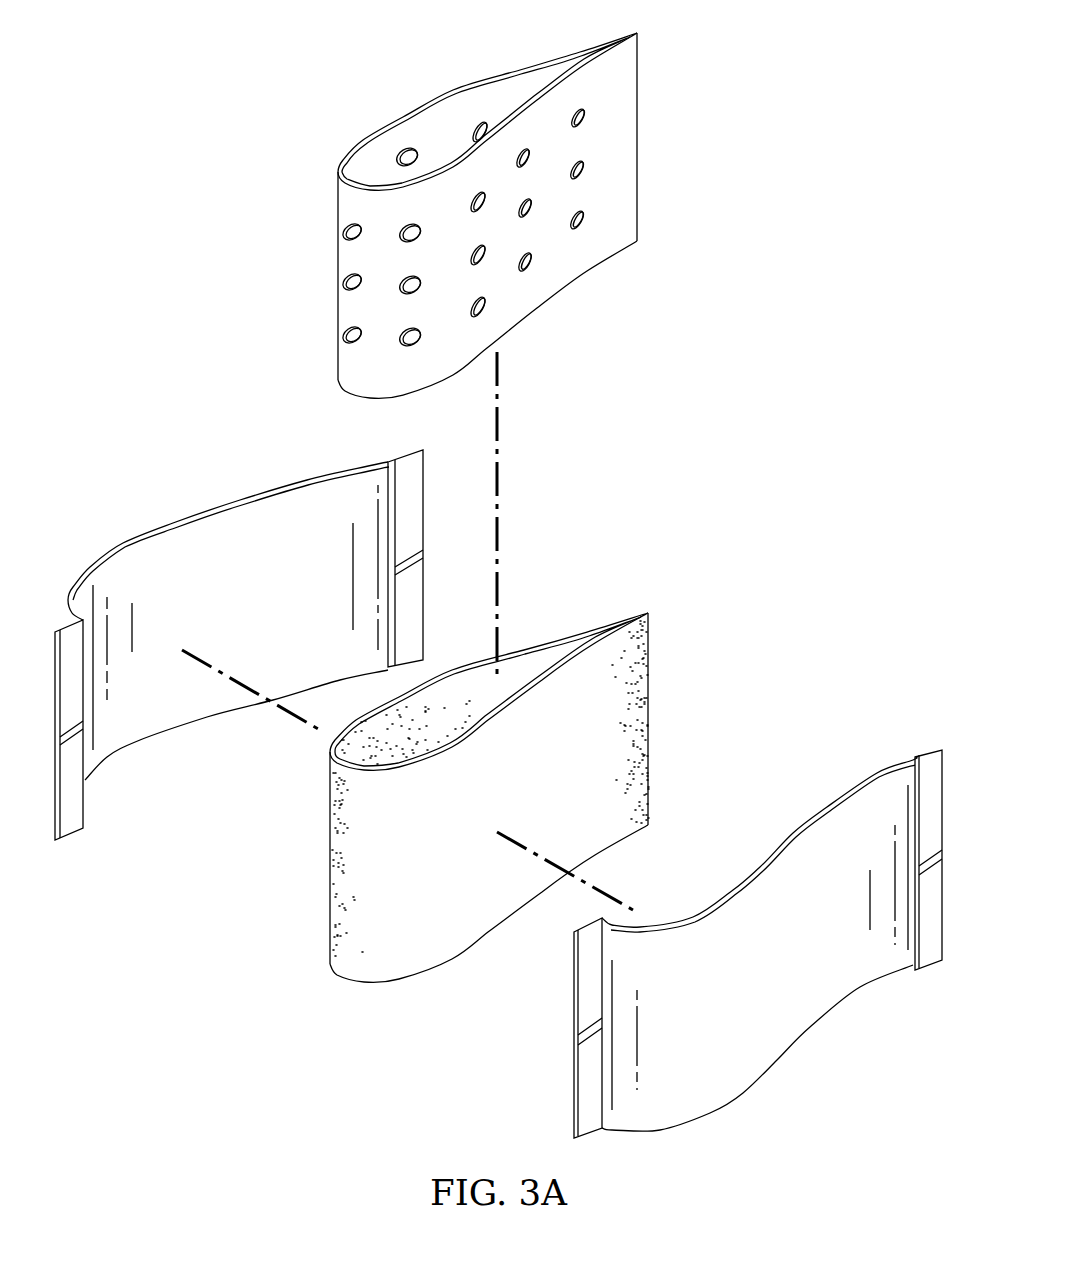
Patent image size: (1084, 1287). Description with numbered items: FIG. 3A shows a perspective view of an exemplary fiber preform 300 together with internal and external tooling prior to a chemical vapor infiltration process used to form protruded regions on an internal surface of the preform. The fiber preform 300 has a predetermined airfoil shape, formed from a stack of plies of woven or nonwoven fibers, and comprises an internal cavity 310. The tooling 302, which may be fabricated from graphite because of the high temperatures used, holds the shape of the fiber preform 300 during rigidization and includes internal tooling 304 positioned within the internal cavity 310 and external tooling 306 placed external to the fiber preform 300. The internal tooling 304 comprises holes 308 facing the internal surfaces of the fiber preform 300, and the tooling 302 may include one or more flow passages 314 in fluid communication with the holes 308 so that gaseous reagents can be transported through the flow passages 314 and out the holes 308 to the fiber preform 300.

The fiber preform 300 is at (612, 612).
The tooling 302 is at (498, 585).
The internal tooling 304 is at (547, 216).
The external tooling 306 is at (197, 512).
The holes 308 is at (584, 171).
The internal cavity 310 is at (468, 688).
The flow passages 314 is at (433, 122).